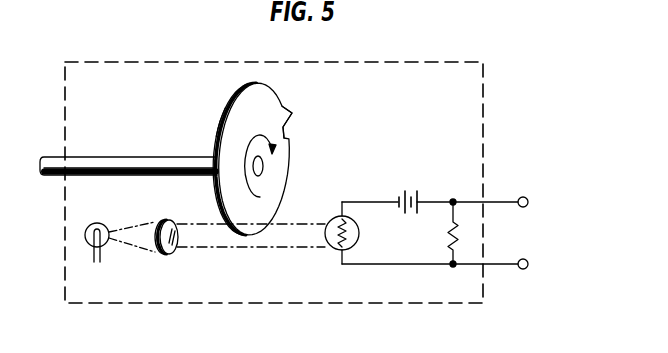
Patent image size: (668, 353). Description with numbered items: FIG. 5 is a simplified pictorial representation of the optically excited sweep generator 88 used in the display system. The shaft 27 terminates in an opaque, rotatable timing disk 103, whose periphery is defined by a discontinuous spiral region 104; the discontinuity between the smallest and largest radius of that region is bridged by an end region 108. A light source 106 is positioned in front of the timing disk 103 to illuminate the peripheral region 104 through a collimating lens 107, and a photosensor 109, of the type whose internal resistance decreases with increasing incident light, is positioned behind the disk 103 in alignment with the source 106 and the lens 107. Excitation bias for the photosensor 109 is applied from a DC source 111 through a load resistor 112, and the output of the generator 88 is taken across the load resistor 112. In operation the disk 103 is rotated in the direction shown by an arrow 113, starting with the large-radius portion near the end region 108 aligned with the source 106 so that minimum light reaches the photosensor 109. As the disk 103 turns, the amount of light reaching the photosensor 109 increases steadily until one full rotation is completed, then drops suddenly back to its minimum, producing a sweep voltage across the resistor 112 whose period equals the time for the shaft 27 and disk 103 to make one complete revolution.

The first sweep generator 88 is at (488, 113).
The shaft 27 is at (90, 163).
The timing disk 103 is at (283, 101).
The discontinuous spiral region 104 is at (221, 126).
The end region 108 is at (291, 124).
The arrow 113 is at (243, 158).
The light source 106 is at (101, 223).
The collimating lens 107 is at (163, 255).
The photosensor 109 is at (332, 247).
The DC source 111 is at (413, 178).
The load resistor 112 is at (446, 228).